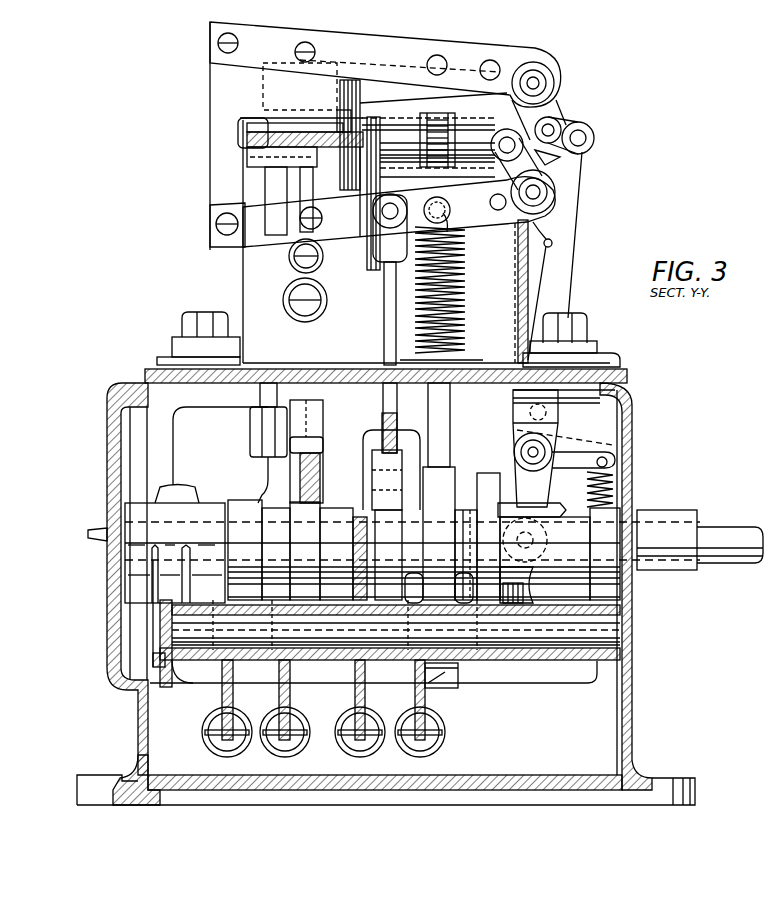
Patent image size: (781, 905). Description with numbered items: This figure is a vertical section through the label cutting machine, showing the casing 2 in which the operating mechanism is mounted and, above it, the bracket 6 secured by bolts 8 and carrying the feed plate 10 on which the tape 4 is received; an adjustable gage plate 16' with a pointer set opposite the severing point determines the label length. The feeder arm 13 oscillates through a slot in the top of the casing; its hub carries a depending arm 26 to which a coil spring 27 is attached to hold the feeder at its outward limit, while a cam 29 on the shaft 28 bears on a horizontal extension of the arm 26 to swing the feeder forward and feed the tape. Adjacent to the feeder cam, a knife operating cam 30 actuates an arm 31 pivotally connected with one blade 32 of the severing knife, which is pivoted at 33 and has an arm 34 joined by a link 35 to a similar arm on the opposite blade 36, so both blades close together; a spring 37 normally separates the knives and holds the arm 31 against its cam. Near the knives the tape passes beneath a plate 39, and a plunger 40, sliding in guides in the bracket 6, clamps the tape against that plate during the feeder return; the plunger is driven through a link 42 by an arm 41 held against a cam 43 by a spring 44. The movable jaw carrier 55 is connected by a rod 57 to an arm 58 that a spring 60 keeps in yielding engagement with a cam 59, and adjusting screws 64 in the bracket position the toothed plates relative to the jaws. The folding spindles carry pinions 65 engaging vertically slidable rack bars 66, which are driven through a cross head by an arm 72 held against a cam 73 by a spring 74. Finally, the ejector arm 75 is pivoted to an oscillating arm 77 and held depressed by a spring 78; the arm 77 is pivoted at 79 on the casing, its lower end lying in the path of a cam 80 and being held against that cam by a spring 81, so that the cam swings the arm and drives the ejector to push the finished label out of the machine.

The casing 2 is at (128, 384).
The tape 4 is at (299, 130).
The bracket 6 is at (262, 179).
The bolts 8 is at (192, 318).
The feed plate 10 is at (250, 140).
The arm 13 is at (320, 451).
The gage plate 16' is at (251, 84).
The depending arm 26 is at (362, 695).
The coil spring 27 is at (365, 755).
The shaft 28 is at (731, 530).
The cam 29 is at (340, 502).
The knife operating cam 30 is at (377, 525).
The arm 31 is at (383, 322).
The blade 32 is at (212, 238).
The pivot 33 is at (556, 197).
The arm 34 is at (562, 182).
The link 35 is at (582, 174).
The knife blade 36 is at (386, 46).
The spring 37 is at (462, 250).
The plate 39 is at (247, 127).
The plunger 40 is at (262, 395).
The arm 41 is at (222, 690).
The link 42 is at (264, 477).
The cam 43 is at (193, 544).
The spring 44 is at (233, 752).
The carrier 55 is at (322, 437).
The rod 57 is at (322, 470).
The arm 58 is at (290, 692).
The cam 59 is at (305, 551).
The spring 60 is at (297, 752).
The adjusting screws 64 is at (290, 263).
The pinions 65 is at (437, 118).
The rack bars 66 is at (437, 158).
The arm 72 is at (420, 676).
The cam 73 is at (439, 533).
The spring 74 is at (440, 745).
The ejector arm 75 is at (568, 130).
The oscillating arm 77 is at (567, 250).
The spring 78 is at (565, 232).
The pivot 79 is at (530, 452).
The cam 80 is at (490, 478).
The spring 81 is at (606, 480).